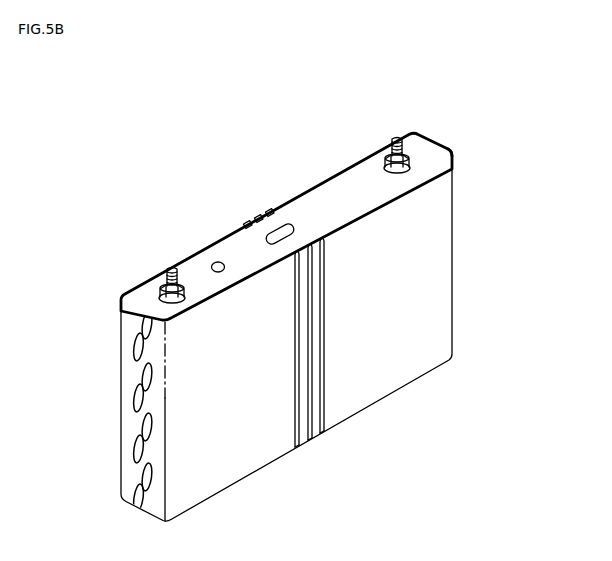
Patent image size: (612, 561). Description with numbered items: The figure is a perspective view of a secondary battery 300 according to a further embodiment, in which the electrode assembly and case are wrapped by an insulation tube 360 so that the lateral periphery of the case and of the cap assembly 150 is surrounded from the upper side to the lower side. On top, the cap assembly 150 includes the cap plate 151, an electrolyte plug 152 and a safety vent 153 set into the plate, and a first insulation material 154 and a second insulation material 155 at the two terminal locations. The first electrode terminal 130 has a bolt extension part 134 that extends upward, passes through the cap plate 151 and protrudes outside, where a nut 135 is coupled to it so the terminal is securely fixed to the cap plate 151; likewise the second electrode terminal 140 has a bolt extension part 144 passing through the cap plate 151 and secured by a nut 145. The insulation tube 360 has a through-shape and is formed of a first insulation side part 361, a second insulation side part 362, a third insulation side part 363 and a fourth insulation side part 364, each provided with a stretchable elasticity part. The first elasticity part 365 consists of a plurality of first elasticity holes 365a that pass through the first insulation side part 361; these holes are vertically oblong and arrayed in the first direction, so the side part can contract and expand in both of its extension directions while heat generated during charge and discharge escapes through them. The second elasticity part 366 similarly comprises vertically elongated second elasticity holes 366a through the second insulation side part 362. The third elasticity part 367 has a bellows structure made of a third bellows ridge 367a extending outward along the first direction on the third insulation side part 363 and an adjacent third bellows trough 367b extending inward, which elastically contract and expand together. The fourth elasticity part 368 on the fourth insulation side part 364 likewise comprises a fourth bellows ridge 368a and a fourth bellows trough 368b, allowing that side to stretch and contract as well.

The secondary battery 300 is at (112, 151).
The first electrode terminal 130 is at (164, 263).
The bolt extension part 134 is at (171, 268).
The nut 135 is at (162, 281).
The second electrode terminal 140 is at (391, 138).
The bolt extension part 144 is at (398, 136).
The nut 145 is at (407, 149).
The cap assembly 150 is at (313, 191).
The cap plate 151 is at (352, 179).
The electrolyte plug 152 is at (213, 262).
The safety vent 153 is at (266, 240).
The first insulation material 154 is at (160, 288).
The second insulation material 155 is at (387, 162).
The insulation tube 360 is at (107, 410).
The first insulation side part 361 is at (128, 448).
The second insulation side part 362 is at (454, 151).
The third insulation side part 363 is at (226, 489).
The fourth insulation side part 364 is at (223, 231).
The first elasticity part 365 is at (134, 342).
The first elasticity holes 365a is at (133, 352).
The second elasticity part 366 is at (441, 143).
The second elasticity holes 366a is at (446, 146).
The third elasticity part 367 is at (337, 433).
The third bellows ridge 367a is at (298, 448).
The third bellows trough 367b is at (318, 437).
The fourth elasticity part 368 is at (271, 209).
The fourth bellows ridge 368a is at (255, 219).
The fourth bellows trough 368b is at (261, 214).